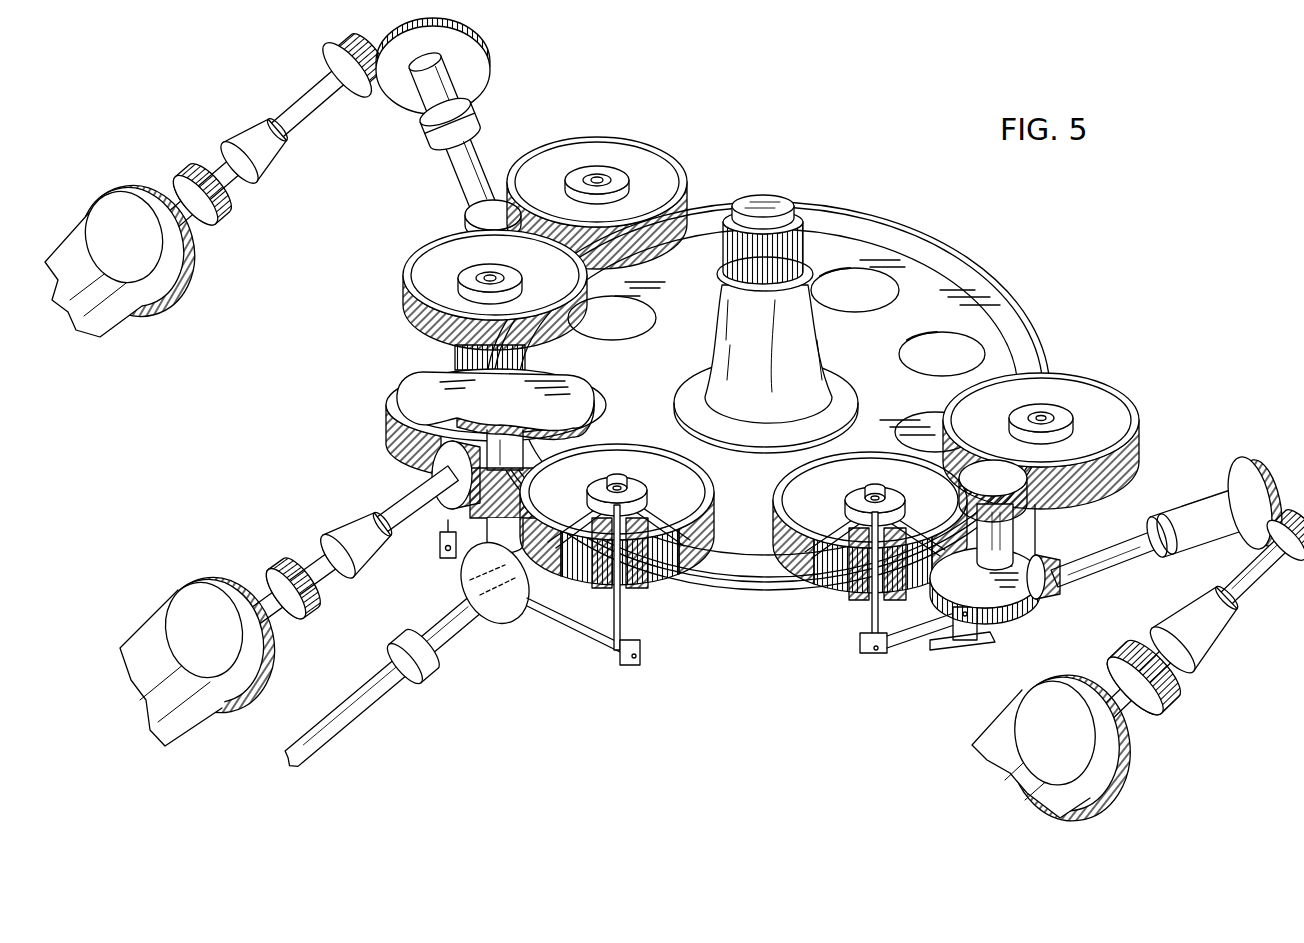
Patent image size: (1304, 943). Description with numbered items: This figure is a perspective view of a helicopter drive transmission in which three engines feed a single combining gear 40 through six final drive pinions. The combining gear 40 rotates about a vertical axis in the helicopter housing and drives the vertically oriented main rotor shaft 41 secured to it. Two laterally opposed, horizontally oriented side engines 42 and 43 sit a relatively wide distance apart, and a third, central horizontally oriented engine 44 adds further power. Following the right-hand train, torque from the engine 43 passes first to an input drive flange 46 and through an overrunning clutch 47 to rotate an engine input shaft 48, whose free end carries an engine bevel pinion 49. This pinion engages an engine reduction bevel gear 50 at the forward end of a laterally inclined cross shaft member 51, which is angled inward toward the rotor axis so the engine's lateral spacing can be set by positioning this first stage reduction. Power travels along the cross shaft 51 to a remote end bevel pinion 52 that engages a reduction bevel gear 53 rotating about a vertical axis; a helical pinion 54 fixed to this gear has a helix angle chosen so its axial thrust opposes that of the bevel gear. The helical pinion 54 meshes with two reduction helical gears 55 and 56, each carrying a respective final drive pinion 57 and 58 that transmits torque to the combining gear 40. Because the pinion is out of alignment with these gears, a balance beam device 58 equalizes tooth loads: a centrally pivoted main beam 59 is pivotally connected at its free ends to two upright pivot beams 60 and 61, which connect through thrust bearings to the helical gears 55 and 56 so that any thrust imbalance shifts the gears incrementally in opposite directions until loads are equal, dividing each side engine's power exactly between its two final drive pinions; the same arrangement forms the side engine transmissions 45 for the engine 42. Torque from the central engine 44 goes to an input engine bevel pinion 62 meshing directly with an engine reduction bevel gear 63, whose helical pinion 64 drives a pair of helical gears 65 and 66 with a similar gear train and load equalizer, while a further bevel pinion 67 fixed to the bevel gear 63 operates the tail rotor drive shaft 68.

The combining gear 40 is at (677, 360).
The main rotor shaft 41 is at (790, 378).
The helicopter engine 42 is at (190, 262).
The helicopter engine 43 is at (1131, 653).
The central helicopter engine 44 is at (200, 592).
The side engine transmissions 45 is at (1158, 494).
The input drive flange 46 is at (1143, 677).
The overrunning clutch 47 is at (1197, 626).
The engine input shaft 48 is at (1183, 639).
The engine bevel pinion 49 is at (1282, 534).
The engine reduction bevel gear 50 is at (1250, 465).
The cross shaft member 51 is at (1106, 575).
The remote end bevel pinion 52 is at (1046, 590).
The reduction bevel gear 53 is at (1012, 598).
The helical pinion 54 is at (978, 492).
The reduction helical gear 55 is at (840, 483).
The reduction helical gear 56 is at (1085, 402).
The final drive pinion 57 is at (845, 590).
The final drive pinion 58 is at (945, 650).
The main beam 59 is at (886, 612).
The upright pivot beam 60 is at (868, 606).
The upright pivot beam 61 is at (1040, 566).
The input engine bevel pinion 62 is at (412, 472).
The engine reduction bevel gear 63 is at (499, 419).
The helical pinion 64 is at (570, 452).
The helical gear 65 is at (395, 402).
The helical gear 66 is at (692, 492).
The further bevel pinion 67 is at (440, 546).
The tail rotor drive shaft 68 is at (476, 632).